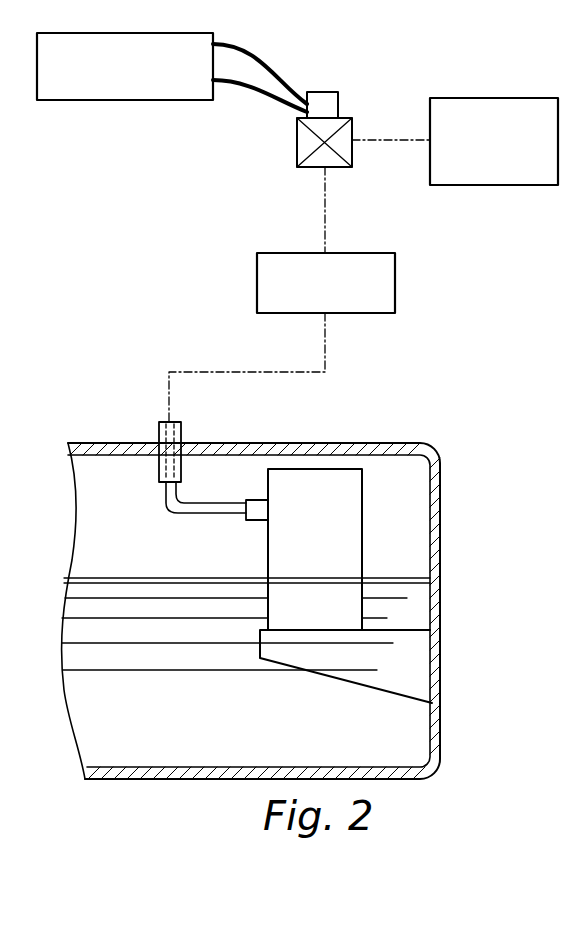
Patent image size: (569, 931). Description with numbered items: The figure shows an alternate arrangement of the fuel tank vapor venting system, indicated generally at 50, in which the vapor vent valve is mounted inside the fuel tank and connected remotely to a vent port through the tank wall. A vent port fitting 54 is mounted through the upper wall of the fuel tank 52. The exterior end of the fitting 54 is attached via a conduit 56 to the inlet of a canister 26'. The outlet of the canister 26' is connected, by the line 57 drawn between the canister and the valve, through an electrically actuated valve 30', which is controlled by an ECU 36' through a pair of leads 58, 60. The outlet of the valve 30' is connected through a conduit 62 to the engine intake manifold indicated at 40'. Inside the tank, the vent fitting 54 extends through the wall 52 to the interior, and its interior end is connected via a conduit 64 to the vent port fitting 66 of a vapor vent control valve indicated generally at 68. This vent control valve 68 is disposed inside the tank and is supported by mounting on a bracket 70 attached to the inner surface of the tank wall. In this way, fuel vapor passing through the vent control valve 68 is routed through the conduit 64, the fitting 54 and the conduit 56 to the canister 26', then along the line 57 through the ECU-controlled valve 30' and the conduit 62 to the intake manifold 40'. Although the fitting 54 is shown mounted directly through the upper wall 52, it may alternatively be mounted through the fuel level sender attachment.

The ECU 36' is at (125, 94).
The lead 60 is at (268, 70).
The lead 58 is at (262, 100).
The electrically actuated valve 30' is at (350, 97).
The engine intake manifold 40' is at (494, 116).
The conduit 62 is at (403, 143).
The vapor line from canister to valve 57 is at (323, 226).
The canister 26' is at (342, 264).
The conduit 56 is at (225, 372).
The alternate arrangement of the system 50 is at (305, 529).
The upper wall of the fuel tank 52 is at (305, 443).
The vent port fitting 54 is at (158, 433).
The conduit 64 is at (185, 515).
The vent port fitting 66 is at (264, 498).
The vapor vent control valve 68 is at (378, 520).
The bracket 70 is at (402, 630).